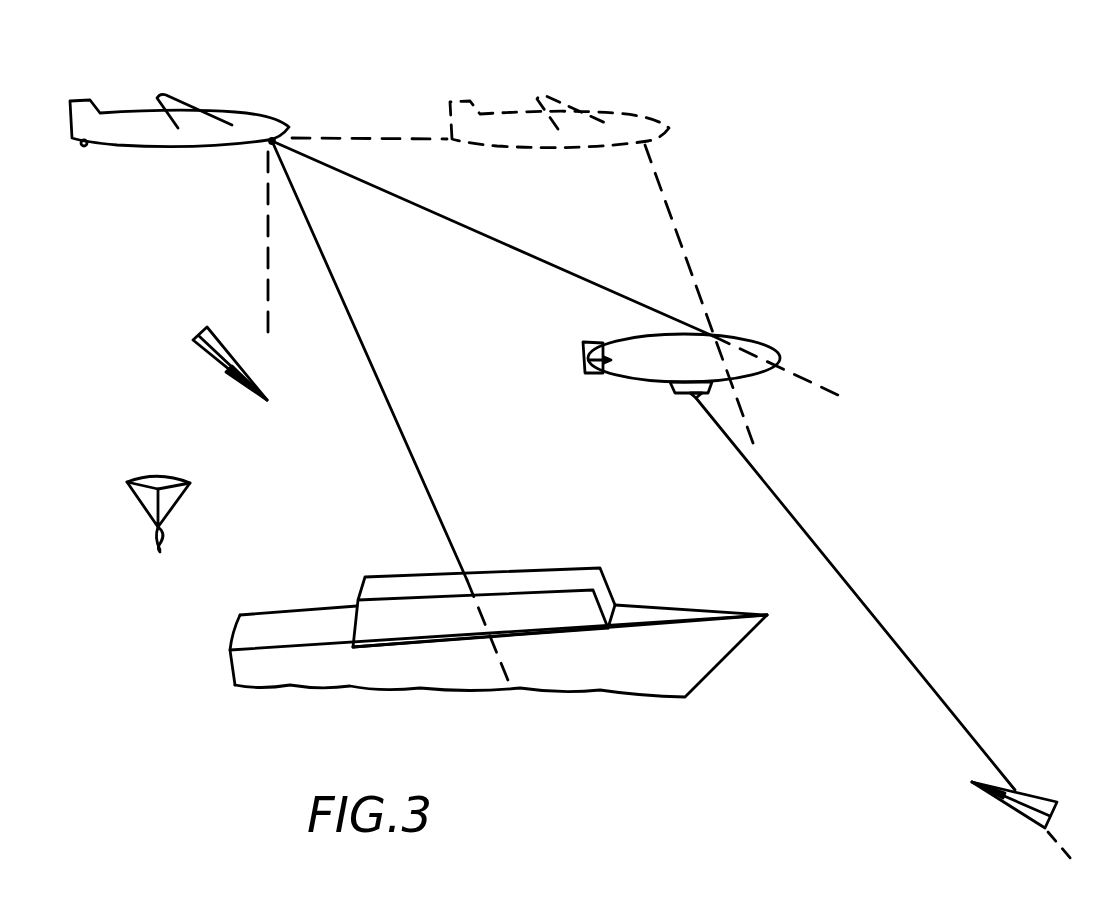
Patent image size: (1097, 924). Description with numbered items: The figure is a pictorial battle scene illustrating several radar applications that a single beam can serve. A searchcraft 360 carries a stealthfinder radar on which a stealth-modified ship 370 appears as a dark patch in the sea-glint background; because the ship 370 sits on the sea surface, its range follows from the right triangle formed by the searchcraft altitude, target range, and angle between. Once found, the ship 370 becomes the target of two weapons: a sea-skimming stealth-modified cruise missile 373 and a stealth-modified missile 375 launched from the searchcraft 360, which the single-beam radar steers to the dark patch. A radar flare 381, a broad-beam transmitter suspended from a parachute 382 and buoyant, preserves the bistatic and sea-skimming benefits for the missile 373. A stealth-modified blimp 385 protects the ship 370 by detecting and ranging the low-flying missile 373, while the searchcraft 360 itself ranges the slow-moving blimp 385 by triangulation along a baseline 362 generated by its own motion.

The searchcraft 360 is at (248, 112).
The baseline 362 is at (358, 138).
The stealth-modified blimp 385 is at (762, 342).
The stealth-modified missile 375 is at (232, 374).
The parachute 382 is at (148, 473).
The radar flare 381 is at (155, 540).
The ship 370 is at (633, 600).
The sea-skimming stealth-modified cruise missile 373 is at (1025, 790).